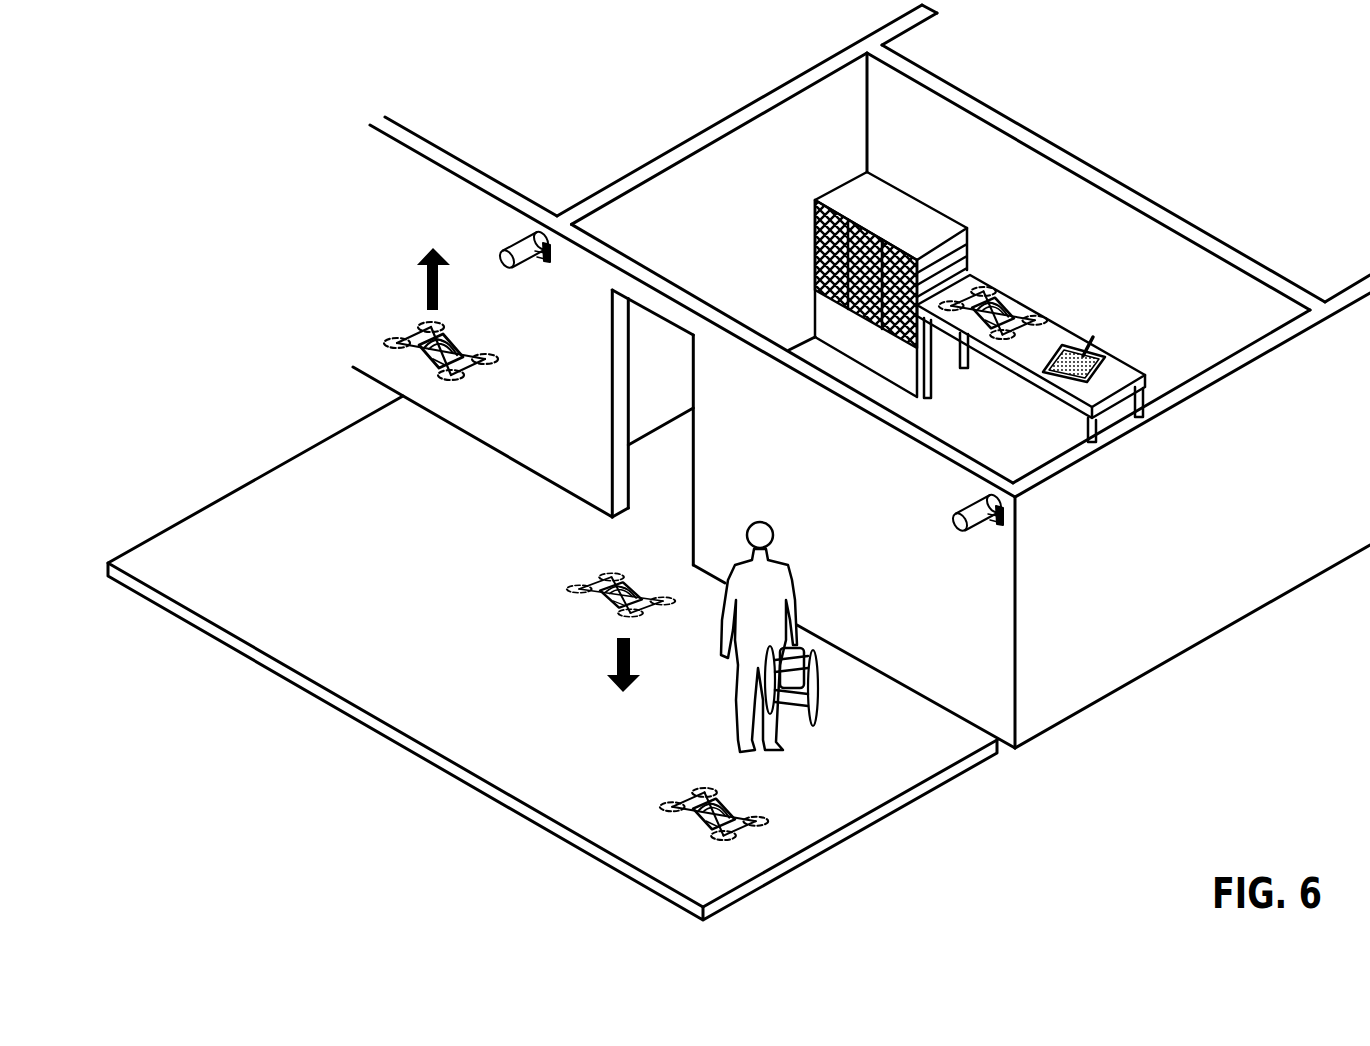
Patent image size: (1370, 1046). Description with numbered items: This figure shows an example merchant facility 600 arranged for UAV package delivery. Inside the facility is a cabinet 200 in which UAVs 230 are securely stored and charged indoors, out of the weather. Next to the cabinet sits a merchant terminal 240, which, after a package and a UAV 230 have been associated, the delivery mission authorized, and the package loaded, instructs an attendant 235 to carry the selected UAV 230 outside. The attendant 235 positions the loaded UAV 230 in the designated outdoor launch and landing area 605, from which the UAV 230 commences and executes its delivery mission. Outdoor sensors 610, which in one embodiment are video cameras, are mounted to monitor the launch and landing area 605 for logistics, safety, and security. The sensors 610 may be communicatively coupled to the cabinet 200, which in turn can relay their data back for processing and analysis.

The merchant facility 600 is at (1228, 108).
The launch and landing area 605 is at (530, 665).
The cabinet 200 is at (932, 182).
The UAV 230 is at (1013, 287).
The attendant 235 is at (776, 587).
The merchant terminal 240 is at (1104, 322).
The outdoor sensors 610 is at (523, 266).